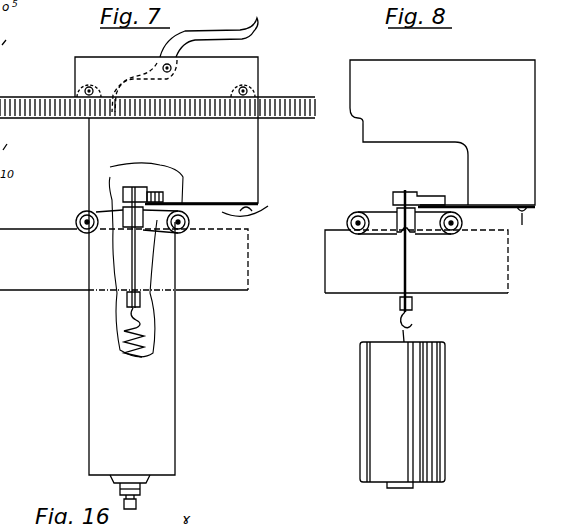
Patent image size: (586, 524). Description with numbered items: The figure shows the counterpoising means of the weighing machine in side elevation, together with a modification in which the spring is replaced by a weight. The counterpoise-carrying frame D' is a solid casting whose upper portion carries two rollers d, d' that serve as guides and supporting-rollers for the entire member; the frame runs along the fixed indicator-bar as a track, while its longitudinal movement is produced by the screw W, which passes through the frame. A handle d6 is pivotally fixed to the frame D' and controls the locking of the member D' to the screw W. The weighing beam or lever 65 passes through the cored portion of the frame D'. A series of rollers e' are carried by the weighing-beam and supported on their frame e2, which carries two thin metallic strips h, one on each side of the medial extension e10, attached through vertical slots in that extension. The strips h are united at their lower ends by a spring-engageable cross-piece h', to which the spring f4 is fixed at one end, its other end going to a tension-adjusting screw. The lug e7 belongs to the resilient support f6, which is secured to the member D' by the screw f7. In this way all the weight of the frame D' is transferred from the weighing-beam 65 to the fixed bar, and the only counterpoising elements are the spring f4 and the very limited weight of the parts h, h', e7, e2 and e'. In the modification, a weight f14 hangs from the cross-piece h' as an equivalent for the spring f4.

In FIG. 7, the counterpoise-carrying frame D' is at (142, 128).
In FIG. 8, the counterpoise-carrying frame D' is at (419, 132).
In FIG. 7, the roller d is at (62, 89).
In FIG. 7, the pivot hole d' is at (261, 93).
In FIG. 7, the handle d6 is at (192, 33).
In FIG. 7, the screw W is at (26, 117).
In FIG. 7, the rollers e' is at (128, 217).
In FIG. 8, the rollers e' is at (393, 223).
In FIG. 8, the roller-carrying frame e2 is at (372, 217).
In FIG. 7, the lug e7 is at (140, 194).
In FIG. 7, the medial extension e10 is at (130, 216).
In FIG. 7, the thin metallic strips h is at (169, 247).
In FIG. 8, the thin metallic strips h is at (421, 251).
In FIG. 7, the cross-piece h' is at (167, 303).
In FIG. 8, the cross-piece h' is at (421, 308).
In FIG. 7, the spring f4 is at (147, 331).
In FIG. 7, the resilient support f6 is at (256, 210).
In FIG. 8, the resilient support f6 is at (453, 203).
In FIG. 7, the screw f7 is at (252, 207).
In FIG. 8, the screw f7 is at (522, 225).
In FIG. 8, the weight f14 is at (437, 397).
In FIG. 7, the weighing beam or lever 65 is at (124, 259).
In FIG. 8, the weighing beam or lever 65 is at (416, 261).